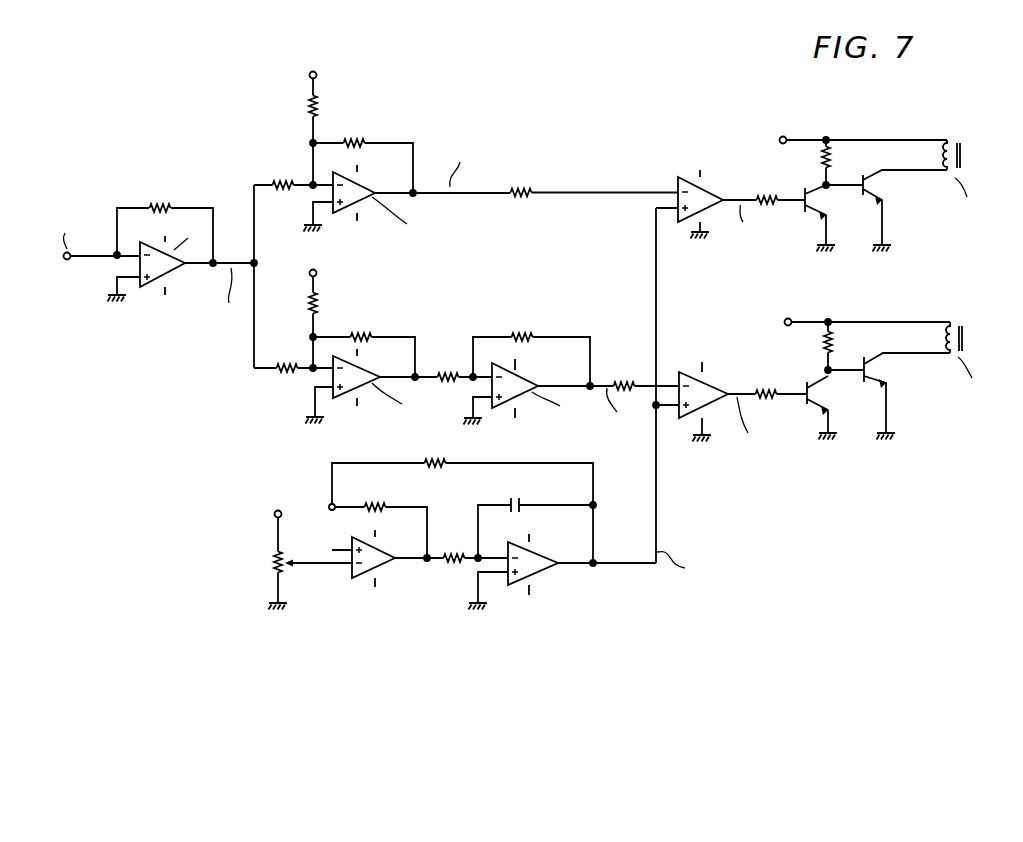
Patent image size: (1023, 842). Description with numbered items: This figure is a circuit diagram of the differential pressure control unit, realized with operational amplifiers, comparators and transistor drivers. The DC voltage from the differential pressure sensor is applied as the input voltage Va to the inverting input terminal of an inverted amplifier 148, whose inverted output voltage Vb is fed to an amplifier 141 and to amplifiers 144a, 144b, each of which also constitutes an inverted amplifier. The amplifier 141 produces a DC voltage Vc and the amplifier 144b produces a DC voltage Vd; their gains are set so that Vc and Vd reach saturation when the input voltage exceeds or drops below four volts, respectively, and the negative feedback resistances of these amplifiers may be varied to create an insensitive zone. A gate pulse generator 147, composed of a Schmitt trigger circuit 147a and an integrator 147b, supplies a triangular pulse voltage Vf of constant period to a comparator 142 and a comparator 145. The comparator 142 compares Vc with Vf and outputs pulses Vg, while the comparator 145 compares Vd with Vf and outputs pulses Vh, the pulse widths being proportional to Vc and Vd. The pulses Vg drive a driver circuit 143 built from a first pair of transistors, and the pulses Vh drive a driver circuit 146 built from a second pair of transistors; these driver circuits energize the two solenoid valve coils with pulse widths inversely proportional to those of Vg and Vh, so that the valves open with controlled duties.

The amplifier 141 is at (377, 215).
The comparator 142 is at (714, 214).
The driver circuit 143 is at (903, 209).
The amplifier 144a is at (387, 325).
The amplifier 144b is at (559, 320).
The comparator 145 is at (718, 408).
The driver circuit 146 is at (908, 400).
The gate pulse generator 147 is at (533, 457).
The Schmitt trigger circuit 147a is at (389, 497).
The integrator 147b is at (532, 497).
The inverted amplifier 148 is at (140, 299).